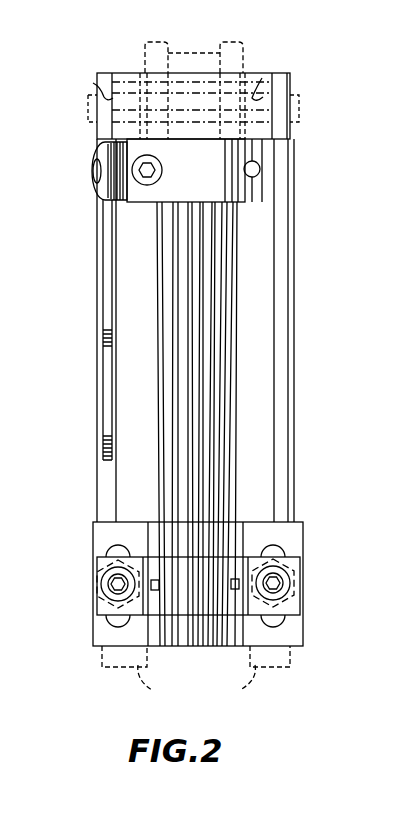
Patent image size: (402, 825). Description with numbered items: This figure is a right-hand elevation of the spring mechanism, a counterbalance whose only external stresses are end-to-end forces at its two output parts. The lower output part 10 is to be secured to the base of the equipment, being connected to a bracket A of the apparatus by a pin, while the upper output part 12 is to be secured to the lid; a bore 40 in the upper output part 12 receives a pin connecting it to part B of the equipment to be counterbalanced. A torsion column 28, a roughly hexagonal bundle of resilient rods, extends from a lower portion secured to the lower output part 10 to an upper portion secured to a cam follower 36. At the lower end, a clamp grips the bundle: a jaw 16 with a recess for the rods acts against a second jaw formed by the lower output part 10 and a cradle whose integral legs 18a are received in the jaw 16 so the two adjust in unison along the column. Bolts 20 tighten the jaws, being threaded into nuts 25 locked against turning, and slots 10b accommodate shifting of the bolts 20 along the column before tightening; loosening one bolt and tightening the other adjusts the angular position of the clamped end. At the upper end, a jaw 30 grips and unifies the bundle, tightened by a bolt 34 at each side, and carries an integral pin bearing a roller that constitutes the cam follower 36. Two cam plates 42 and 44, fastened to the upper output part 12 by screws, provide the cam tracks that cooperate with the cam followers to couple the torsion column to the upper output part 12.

The lower output part 10 is at (98, 532).
The slots 10b is at (108, 550).
The upper output part 12 is at (125, 82).
The jaw 16 is at (178, 583).
The integral legs 18a is at (155, 592).
The bolts 20 is at (104, 589).
The nuts 25 is at (95, 629).
The torsion column 28 is at (216, 334).
The jaw 30 is at (198, 179).
The bolt 34 is at (260, 169).
The cam follower 36 is at (83, 174).
The bore 40 is at (93, 83).
The cam plate 42 is at (97, 318).
The cam plate 44 is at (295, 220).
The bracket A is at (225, 688).
The part of equipment B is at (240, 36).